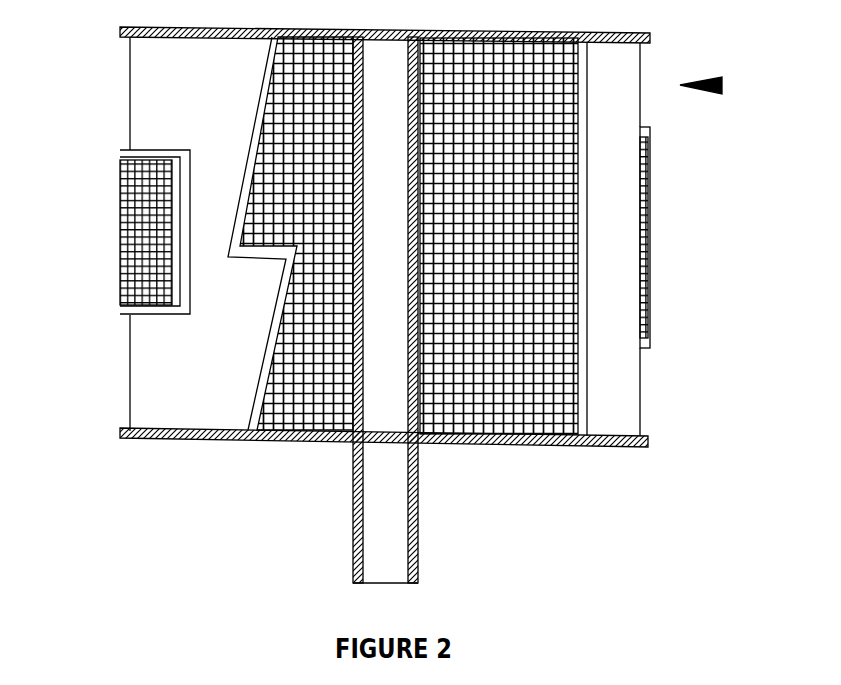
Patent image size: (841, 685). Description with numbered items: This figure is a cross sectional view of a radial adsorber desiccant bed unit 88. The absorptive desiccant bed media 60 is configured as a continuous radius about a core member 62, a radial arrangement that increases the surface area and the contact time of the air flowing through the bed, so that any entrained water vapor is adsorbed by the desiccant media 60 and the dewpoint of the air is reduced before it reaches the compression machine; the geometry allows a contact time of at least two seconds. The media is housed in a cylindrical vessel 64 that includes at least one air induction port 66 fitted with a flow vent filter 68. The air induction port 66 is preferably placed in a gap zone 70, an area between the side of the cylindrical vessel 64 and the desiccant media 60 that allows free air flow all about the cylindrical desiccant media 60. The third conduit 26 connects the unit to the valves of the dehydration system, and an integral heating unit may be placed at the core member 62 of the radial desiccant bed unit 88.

The third conduit 26 is at (398, 552).
The absorptive desiccant bed media 60 is at (403, 269).
The core member 62 is at (315, 310).
The cylindrical vessel 64 is at (130, 89).
The air induction port 66 is at (145, 317).
The flow vent filter 68 is at (118, 250).
The gap zone 70 is at (625, 399).
The radial desiccant bed unit 88 is at (722, 85).